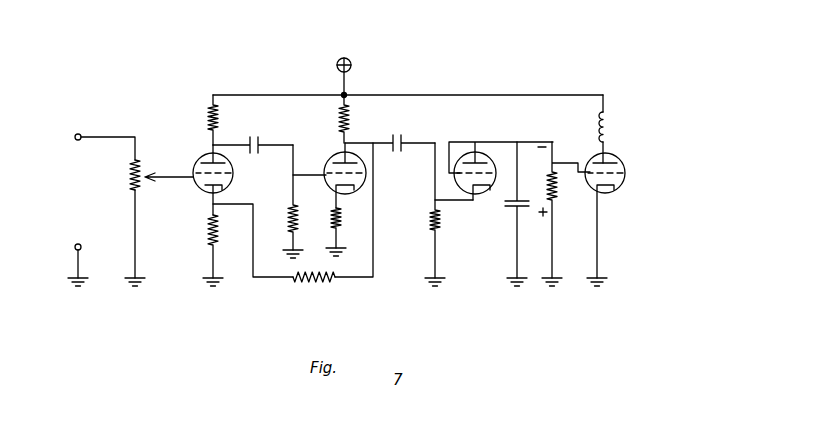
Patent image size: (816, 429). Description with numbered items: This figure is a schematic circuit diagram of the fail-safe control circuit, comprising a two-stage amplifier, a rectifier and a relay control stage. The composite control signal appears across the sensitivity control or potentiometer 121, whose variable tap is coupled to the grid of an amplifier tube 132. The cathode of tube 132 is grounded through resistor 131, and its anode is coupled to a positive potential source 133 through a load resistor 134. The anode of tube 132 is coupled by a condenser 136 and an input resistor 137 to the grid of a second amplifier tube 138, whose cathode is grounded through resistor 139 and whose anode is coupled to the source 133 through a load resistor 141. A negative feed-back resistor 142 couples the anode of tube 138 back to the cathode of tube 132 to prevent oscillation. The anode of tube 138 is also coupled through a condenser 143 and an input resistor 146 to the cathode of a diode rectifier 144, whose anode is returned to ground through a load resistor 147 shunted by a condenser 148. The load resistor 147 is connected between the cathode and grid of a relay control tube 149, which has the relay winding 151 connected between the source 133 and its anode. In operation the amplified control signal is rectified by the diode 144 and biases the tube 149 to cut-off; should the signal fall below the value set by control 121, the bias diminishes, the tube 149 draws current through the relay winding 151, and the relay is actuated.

The sensitivity control potentiometer 121 is at (129, 183).
The resistor 131 is at (203, 241).
The amplifier tube 132 is at (201, 189).
The positive potential source 133 is at (350, 58).
The load resistor 134 is at (209, 114).
The condenser 136 is at (261, 143).
The input resistor 137 is at (291, 221).
The amplifier tube 138 is at (356, 190).
The resistor 139 is at (341, 218).
The load resistor 141 is at (349, 112).
The negative feed-back resistor 142 is at (313, 291).
The condenser 143 is at (400, 137).
The diode rectifier 144 is at (483, 158).
The input resistor 146 is at (428, 232).
The load resistor 147 is at (558, 192).
The shunt condenser 148 is at (507, 206).
The relay control tube 149 is at (613, 190).
The relay winding 151 is at (612, 122).